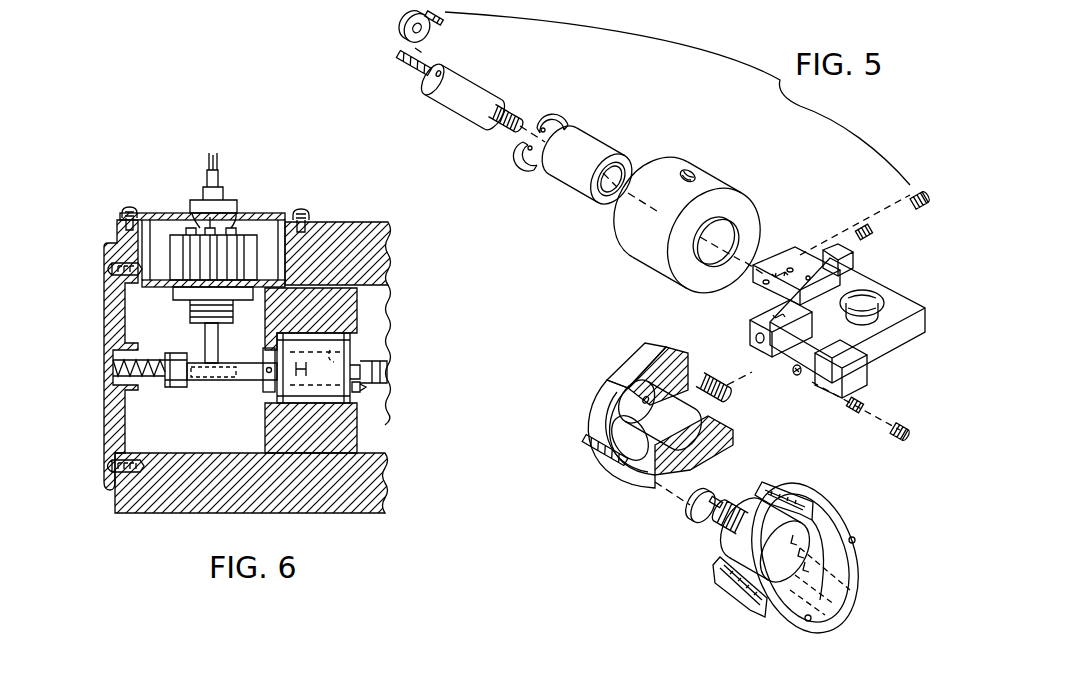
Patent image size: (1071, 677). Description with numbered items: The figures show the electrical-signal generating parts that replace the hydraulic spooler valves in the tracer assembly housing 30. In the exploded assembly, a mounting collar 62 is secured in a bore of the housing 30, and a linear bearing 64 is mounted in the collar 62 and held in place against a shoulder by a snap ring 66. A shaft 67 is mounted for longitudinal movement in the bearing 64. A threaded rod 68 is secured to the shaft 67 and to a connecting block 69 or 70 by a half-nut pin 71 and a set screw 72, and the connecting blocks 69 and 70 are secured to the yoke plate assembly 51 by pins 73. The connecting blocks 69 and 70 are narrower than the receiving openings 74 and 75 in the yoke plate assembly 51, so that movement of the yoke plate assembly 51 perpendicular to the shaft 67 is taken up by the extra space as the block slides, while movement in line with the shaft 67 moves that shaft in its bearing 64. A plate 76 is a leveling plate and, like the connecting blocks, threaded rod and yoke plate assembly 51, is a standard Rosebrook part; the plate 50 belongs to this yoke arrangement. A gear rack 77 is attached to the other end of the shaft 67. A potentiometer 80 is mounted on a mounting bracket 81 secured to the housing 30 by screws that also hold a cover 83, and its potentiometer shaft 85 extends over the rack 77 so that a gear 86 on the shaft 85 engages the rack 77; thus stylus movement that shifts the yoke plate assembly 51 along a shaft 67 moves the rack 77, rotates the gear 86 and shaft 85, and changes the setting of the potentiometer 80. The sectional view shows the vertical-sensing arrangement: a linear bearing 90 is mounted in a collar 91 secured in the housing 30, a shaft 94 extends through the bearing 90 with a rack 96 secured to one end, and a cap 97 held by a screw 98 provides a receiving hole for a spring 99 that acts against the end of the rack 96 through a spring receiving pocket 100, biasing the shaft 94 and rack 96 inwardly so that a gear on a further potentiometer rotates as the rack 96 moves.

In FIG. 6, the assembly housing 30 is at (155, 513).
In FIG. 5, the mounting plate 50 is at (870, 297).
In FIG. 5, the yoke plate assembly 51 is at (850, 316).
In FIG. 5, the mounting collar 62 is at (643, 257).
In FIG. 5, the linear bearing 64 is at (573, 199).
In FIG. 5, the snap ring 66 is at (522, 174).
In FIG. 5, the shaft 67 is at (455, 100).
In FIG. 5, the threaded rod 68 is at (502, 127).
In FIG. 5, the connecting block 69 is at (800, 377).
In FIG. 5, the connecting block 70 is at (780, 248).
In FIG. 5, the half-nut pin 71 is at (864, 226).
In FIG. 5, the set screw 72 is at (918, 196).
In FIG. 5, the pin 73 is at (867, 380).
In FIG. 5, the receiving opening 74 is at (760, 320).
In FIG. 5, the receiving opening 75 is at (823, 254).
In FIG. 5, the leveling plate 76 is at (880, 323).
In FIG. 5, the gear rack 77 is at (401, 72).
In FIG. 6, the potentiometer 80 is at (173, 236).
In FIG. 6, the mounting bracket 81 is at (278, 222).
In FIG. 6, the cover 83 is at (245, 212).
In FIG. 5, the potentiometer shaft 85 is at (446, 22).
In FIG. 5, the gear 86 is at (407, 28).
In FIG. 6, the linear bearing 90 is at (380, 348).
In FIG. 6, the collar 91 is at (380, 303).
In FIG. 6, the shaft 94 is at (360, 389).
In FIG. 6, the rack 96 is at (385, 370).
In FIG. 6, the cap 97 is at (112, 392).
In FIG. 6, the screw 98 is at (108, 468).
In FIG. 6, the spring 99 is at (150, 352).
In FIG. 6, the spring receiving pocket 100 is at (177, 382).